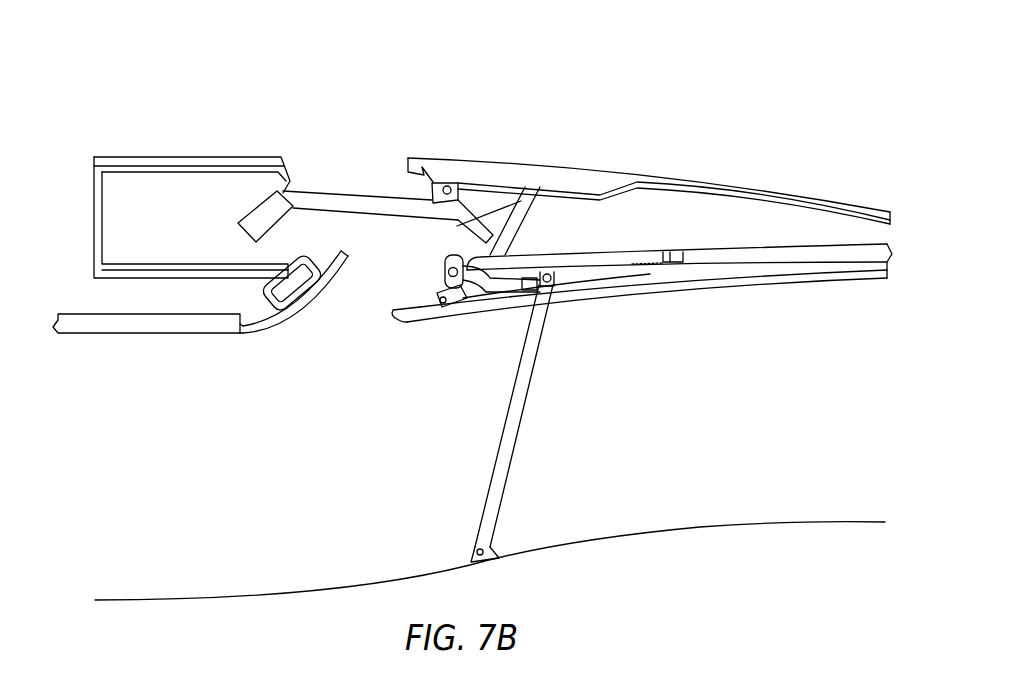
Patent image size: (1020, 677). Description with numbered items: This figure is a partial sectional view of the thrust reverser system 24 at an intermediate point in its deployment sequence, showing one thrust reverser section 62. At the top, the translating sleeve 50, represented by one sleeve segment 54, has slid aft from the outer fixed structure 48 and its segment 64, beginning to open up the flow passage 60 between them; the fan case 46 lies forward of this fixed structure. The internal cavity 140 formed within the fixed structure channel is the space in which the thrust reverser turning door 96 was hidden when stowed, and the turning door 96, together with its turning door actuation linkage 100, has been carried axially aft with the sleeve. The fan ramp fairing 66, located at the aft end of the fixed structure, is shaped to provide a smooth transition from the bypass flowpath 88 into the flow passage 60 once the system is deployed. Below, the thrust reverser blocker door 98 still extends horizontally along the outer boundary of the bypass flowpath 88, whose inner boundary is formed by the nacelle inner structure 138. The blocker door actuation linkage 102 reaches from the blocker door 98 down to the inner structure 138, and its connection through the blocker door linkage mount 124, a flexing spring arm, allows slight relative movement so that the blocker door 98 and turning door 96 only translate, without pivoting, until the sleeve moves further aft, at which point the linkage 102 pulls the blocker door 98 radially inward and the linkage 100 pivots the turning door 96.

The thrust reverser system 24 is at (650, 154).
The thrust reverser section 62 is at (650, 154).
The translating sleeve 50 is at (649, 150).
The sleeve segment 54 is at (645, 166).
The outer fixed structure 48 is at (159, 169).
The segment of the outer fixed structure 64 is at (159, 169).
The internal cavity 140 is at (142, 214).
The flow passage 60 is at (379, 198).
The thrust reverser turning door 96 is at (377, 226).
The turning door actuation linkage 100 is at (536, 237).
The fan ramp fairing 66 is at (277, 338).
The fan case 46 is at (121, 343).
The thrust reverser blocker door 98 is at (435, 336).
The blocker door linkage mount 124 is at (550, 287).
The blocker door actuation linkage 102 is at (538, 440).
The nacelle inner structure 138 is at (781, 515).
The bypass flowpath 88 is at (178, 470).